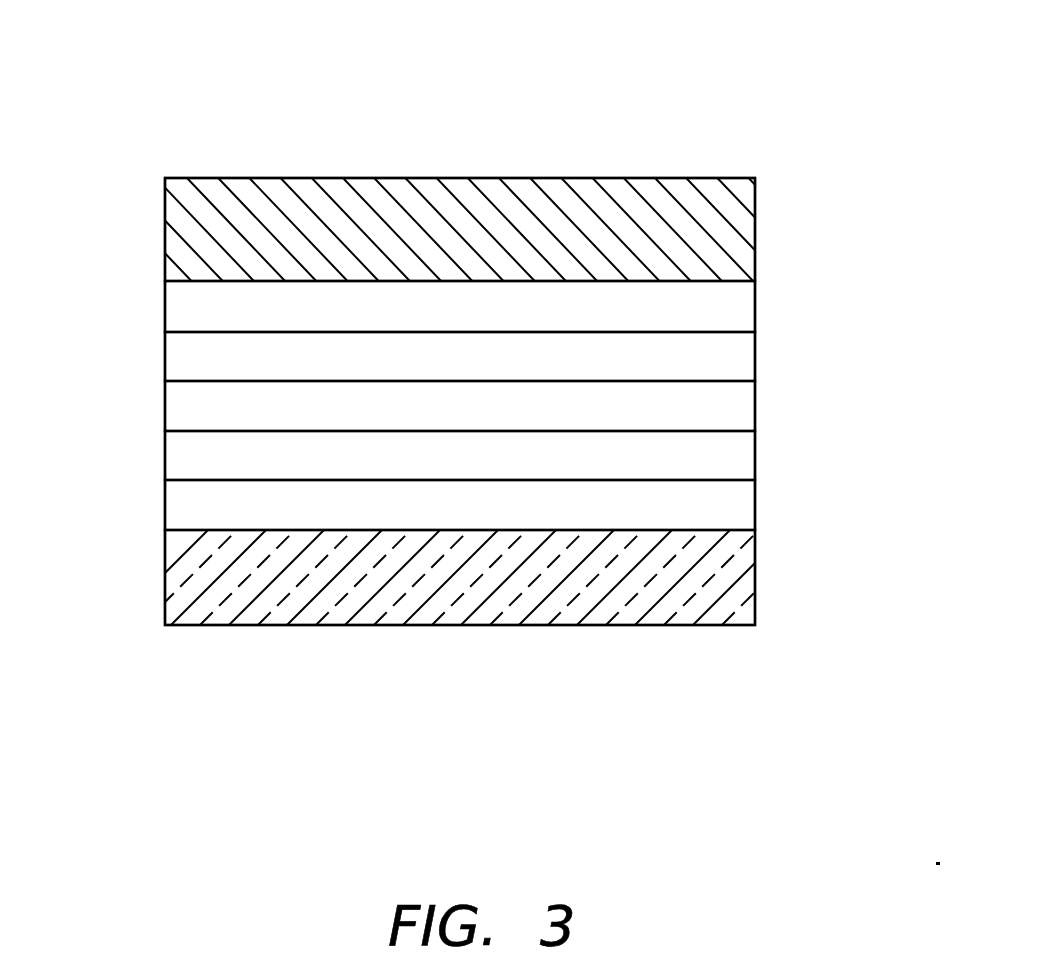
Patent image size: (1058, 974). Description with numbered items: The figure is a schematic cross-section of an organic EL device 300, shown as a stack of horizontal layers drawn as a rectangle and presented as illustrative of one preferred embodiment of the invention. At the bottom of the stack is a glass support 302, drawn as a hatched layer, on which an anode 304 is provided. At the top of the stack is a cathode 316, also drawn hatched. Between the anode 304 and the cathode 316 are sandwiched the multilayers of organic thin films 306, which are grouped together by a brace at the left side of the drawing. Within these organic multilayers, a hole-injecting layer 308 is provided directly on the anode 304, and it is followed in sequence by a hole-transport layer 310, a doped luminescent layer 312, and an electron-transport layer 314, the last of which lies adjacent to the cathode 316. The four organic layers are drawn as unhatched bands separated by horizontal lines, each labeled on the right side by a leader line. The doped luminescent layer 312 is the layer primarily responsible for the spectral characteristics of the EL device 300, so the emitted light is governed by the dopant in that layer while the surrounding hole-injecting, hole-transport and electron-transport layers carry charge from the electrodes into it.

The organic EL device 300 is at (472, 166).
The glass support 302 is at (733, 587).
The anode 304 is at (730, 505).
The multilayers of organic thin films 306 is at (157, 285).
The hole-injecting layer 308 is at (720, 450).
The hole-transport layer 310 is at (727, 408).
The doped luminescent layer 312 is at (730, 360).
The electron-transport layer 314 is at (732, 318).
The cathode 316 is at (737, 243).